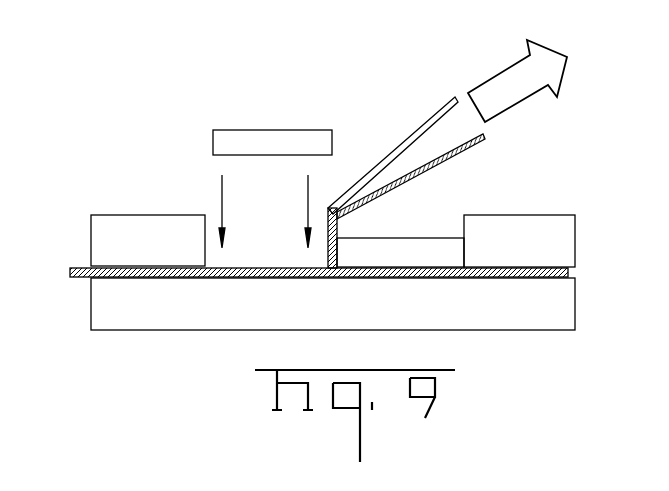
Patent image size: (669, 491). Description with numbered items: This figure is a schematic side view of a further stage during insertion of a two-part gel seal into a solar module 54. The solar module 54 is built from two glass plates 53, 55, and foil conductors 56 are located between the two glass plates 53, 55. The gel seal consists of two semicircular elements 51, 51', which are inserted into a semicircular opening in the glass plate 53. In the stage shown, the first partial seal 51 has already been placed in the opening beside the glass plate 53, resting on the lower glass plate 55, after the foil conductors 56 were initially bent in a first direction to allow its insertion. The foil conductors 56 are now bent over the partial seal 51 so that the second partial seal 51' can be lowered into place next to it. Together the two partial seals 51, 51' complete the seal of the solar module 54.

The semicircular element (first partial seal) 51 is at (426, 212).
The semicircular element (second partial seal) 51' is at (249, 236).
The glass plate 53 is at (552, 230).
The solar module 54 is at (603, 298).
The glass plate 55 is at (115, 307).
The foil conductors 56 is at (403, 145).